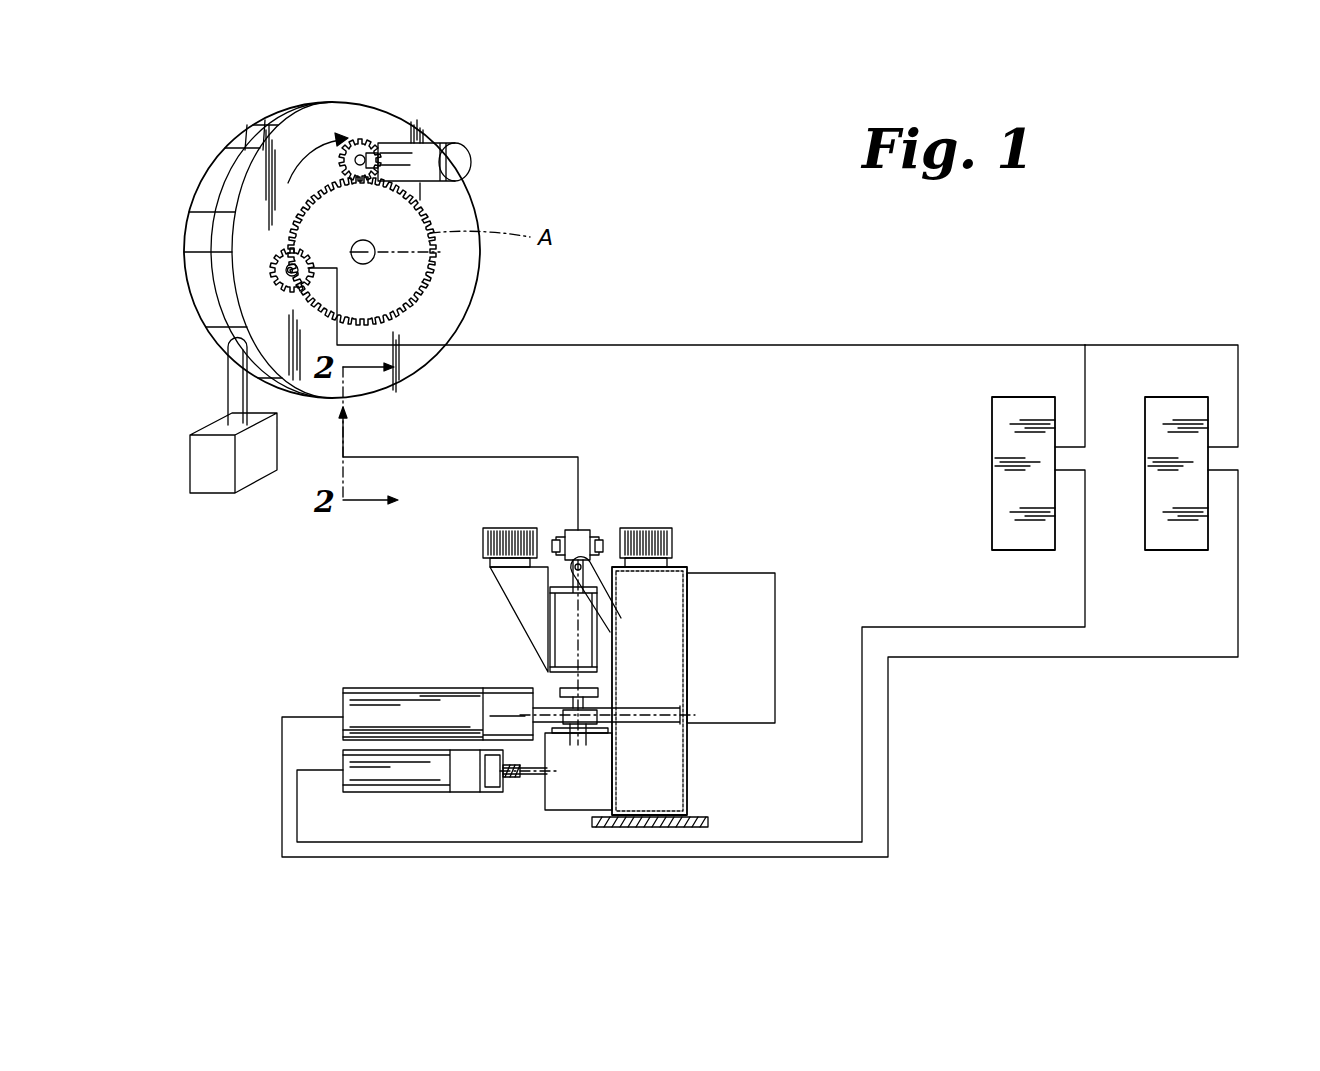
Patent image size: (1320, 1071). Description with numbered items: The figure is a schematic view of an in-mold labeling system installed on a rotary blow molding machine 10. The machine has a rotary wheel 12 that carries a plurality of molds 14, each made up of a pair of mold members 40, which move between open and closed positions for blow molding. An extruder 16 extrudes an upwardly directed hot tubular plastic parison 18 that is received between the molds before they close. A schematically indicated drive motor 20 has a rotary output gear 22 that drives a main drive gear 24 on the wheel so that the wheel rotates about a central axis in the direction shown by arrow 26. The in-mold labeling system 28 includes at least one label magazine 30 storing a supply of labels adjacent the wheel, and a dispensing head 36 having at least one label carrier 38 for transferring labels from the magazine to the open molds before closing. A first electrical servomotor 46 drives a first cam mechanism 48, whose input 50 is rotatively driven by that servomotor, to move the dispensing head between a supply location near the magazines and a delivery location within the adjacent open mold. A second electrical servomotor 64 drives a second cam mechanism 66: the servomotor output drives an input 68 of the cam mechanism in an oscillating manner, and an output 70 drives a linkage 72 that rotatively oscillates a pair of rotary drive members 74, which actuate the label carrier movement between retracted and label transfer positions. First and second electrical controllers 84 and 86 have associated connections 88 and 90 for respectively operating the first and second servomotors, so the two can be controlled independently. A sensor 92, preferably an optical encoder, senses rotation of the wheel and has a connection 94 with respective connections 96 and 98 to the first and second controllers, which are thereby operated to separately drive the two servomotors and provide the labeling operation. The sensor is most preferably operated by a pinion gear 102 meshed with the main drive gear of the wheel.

The rotary blow molding machine 10 is at (212, 150).
The rotary wheel 12 is at (353, 113).
The molds 14 is at (270, 123).
The extruder 16 is at (205, 460).
The hot tubular plastic parison 18 is at (228, 390).
The drive motor 20 is at (415, 138).
The rotary output gear 22 is at (367, 143).
The main drive gear 24 is at (412, 245).
The arrow 26 is at (333, 106).
The in-mold labeling system 28 is at (315, 645).
The label magazine 30 is at (495, 528).
The dispensing head 36 is at (586, 524).
The label carrier 38 is at (560, 532).
The mold members 40 is at (243, 135).
The first electrical servomotor 46 is at (507, 688).
The first cam mechanism 48 is at (727, 710).
The input 50 is at (603, 700).
The second electrical servomotor 64 is at (465, 795).
The second cam mechanism 66 is at (547, 803).
The input 68 is at (513, 792).
The output 70 is at (577, 742).
The linkage 72 is at (607, 733).
The rotary drive members 74 is at (540, 670).
The first electrical controller 84 is at (1178, 550).
The second electrical controller 86 is at (1012, 550).
The connection 88 is at (1075, 657).
The connection 90 is at (910, 627).
The sensor 92 is at (268, 272).
The connection 94 is at (908, 345).
The connection 96 is at (1242, 385).
The connection 98 is at (1088, 385).
The pinion gear 102 is at (283, 258).